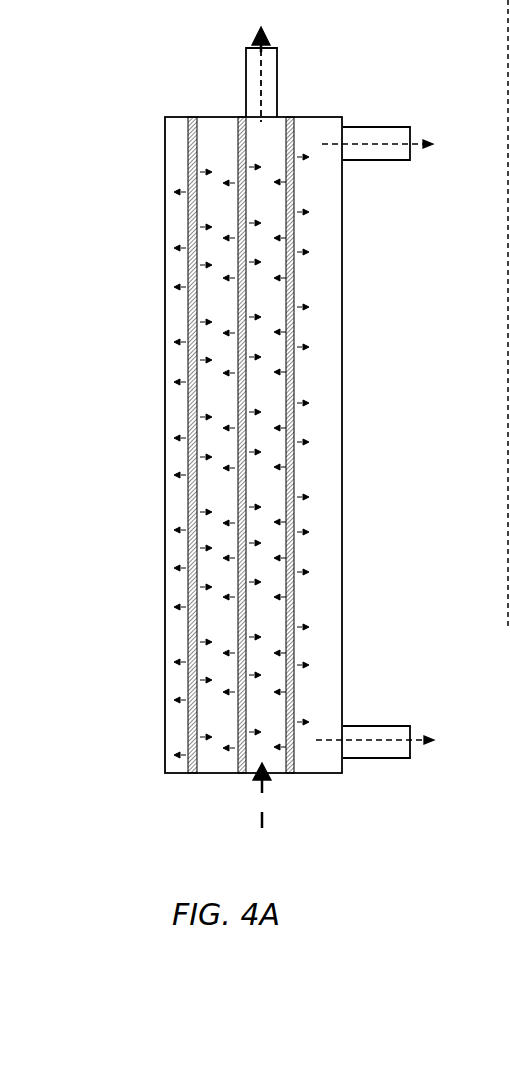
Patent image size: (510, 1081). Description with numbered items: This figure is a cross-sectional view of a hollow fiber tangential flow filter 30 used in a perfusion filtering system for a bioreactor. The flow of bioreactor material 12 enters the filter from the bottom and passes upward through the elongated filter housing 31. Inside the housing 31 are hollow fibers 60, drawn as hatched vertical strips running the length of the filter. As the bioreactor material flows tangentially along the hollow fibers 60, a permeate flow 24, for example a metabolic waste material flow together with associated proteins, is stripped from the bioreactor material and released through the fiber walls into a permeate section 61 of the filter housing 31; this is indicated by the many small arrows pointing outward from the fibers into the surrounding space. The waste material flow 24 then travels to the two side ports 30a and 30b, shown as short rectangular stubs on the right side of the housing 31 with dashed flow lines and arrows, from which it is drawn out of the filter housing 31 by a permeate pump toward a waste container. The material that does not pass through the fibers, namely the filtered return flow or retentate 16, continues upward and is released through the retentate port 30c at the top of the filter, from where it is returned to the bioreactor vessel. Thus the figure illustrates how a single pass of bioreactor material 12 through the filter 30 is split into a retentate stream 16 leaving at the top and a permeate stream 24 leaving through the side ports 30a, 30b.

The hollow fiber tangential flow filter 30 is at (232, 432).
The filter housing 31 is at (165, 430).
The hollow fibers 60 is at (197, 228).
The permeate section 61 is at (178, 632).
The retentate port 30c is at (270, 68).
The port 30b is at (372, 133).
The port 30a is at (363, 733).
The return flow of the bioreactor fluid 16 is at (258, 80).
The flow of bioreactor material 12 is at (262, 813).
The permeate flow 24 is at (417, 140).